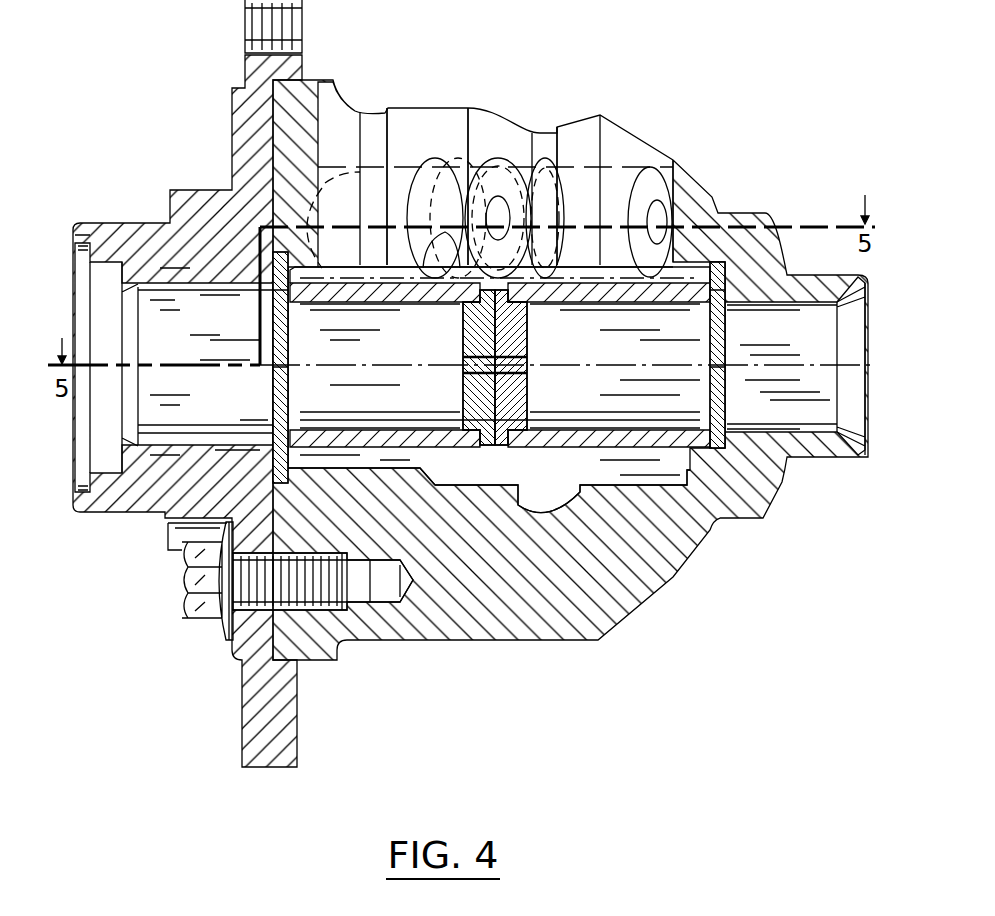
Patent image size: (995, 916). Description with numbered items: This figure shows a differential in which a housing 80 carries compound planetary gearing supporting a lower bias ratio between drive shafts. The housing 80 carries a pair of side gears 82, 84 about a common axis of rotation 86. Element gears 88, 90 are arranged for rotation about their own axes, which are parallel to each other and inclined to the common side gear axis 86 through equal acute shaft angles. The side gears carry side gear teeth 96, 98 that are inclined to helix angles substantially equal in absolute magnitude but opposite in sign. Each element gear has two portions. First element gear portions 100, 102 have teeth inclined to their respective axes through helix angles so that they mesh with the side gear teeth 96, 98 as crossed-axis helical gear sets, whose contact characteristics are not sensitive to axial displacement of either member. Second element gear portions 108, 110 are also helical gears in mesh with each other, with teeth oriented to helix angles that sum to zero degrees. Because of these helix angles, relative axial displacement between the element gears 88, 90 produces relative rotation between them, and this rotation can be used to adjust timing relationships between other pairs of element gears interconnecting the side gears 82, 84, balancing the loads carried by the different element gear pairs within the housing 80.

The housing 80 is at (631, 136).
The side gear 82 is at (330, 300).
The side gear 84 is at (636, 292).
The common axis of rotation 86 is at (822, 366).
The element gear 88 is at (395, 166).
The element gear 90 is at (628, 167).
The side gear teeth 96 is at (423, 455).
The side gear teeth 98 is at (565, 453).
The first element gear portion 100 is at (340, 178).
The first element gear portion 102 is at (600, 176).
The second element gear portion 108 is at (452, 166).
The second element gear portion 110 is at (520, 163).